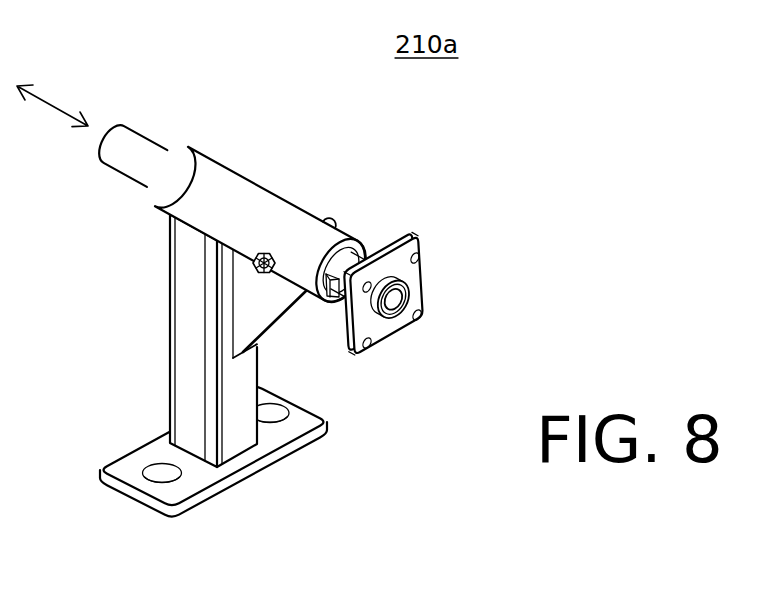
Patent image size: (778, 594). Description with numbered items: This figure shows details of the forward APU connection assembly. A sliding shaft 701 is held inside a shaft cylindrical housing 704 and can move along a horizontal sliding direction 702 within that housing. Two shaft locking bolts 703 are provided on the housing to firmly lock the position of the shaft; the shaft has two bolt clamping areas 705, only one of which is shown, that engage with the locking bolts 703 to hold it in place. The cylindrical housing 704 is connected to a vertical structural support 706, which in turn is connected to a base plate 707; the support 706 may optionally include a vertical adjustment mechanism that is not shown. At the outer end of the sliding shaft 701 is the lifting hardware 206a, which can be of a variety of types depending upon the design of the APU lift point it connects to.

The lifting hardware 206a is at (432, 283).
The sliding shaft 701 is at (162, 127).
The horizontal sliding direction 702 is at (70, 88).
The shaft locking bolts 703 is at (268, 245).
The shaft cylindrical housing 704 is at (180, 193).
The bolt clamping area 705 is at (331, 287).
The vertical structural support 706 is at (188, 355).
The base plate 707 is at (135, 460).